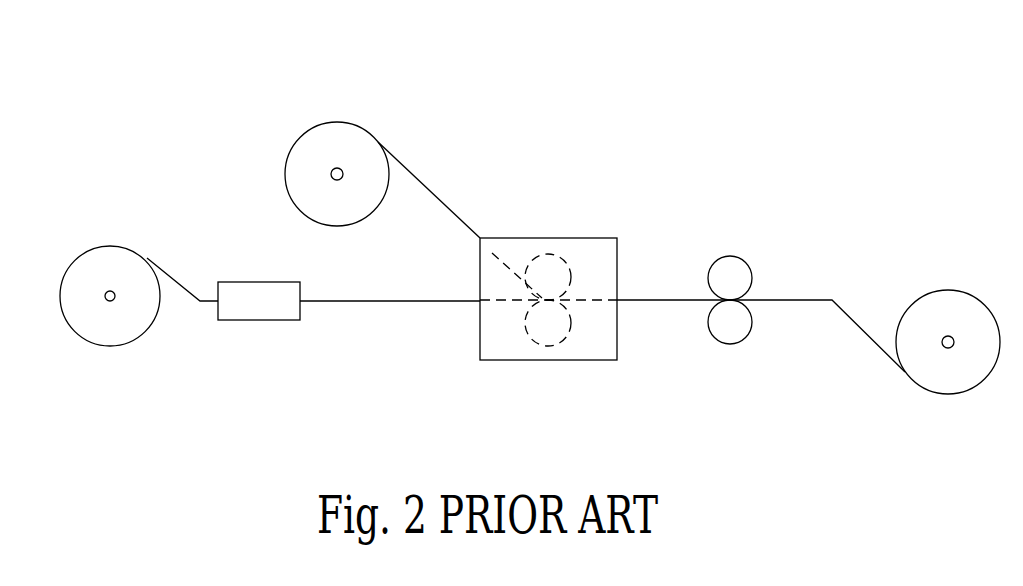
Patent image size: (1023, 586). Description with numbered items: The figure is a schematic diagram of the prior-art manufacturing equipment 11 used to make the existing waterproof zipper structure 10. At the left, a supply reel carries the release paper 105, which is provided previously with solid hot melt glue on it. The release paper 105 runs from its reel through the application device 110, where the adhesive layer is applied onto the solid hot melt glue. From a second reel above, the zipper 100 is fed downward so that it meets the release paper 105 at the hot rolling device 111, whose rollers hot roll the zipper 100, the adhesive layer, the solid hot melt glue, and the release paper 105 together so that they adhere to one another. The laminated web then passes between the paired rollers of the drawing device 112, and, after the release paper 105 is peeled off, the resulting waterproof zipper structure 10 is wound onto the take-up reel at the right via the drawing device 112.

The manufacturing equipment 11 is at (82, 148).
The release paper 105 is at (172, 273).
The zipper 100 is at (430, 188).
The application device 110 is at (258, 320).
The hot rolling device 111 is at (548, 238).
The drawing device 112 is at (740, 252).
The waterproof zipper structure 10 is at (867, 338).